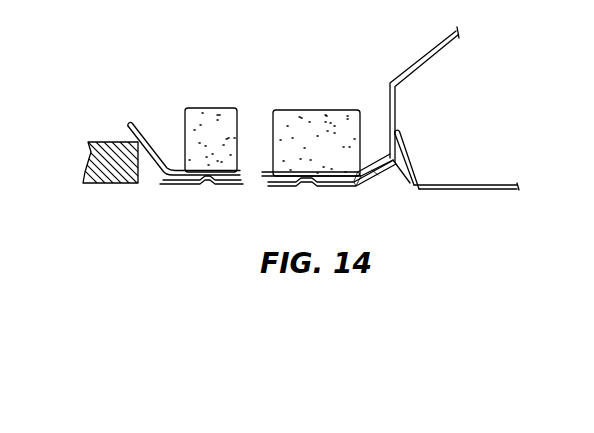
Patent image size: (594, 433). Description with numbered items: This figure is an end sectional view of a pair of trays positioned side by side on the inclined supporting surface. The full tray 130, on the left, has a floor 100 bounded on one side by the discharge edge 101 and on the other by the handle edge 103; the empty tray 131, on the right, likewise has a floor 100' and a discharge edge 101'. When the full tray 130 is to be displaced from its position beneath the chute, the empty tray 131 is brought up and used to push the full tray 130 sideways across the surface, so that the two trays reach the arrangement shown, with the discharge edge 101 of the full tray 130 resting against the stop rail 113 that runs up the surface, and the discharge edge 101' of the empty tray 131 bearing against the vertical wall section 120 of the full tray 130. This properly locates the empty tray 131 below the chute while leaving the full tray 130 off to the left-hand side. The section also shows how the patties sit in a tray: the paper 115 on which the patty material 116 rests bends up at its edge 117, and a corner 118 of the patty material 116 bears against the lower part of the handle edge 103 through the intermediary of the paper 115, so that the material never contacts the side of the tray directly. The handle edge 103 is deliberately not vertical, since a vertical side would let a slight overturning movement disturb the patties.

The floor 100 is at (332, 192).
The floor 100' is at (473, 206).
The discharge edge 101 is at (186, 199).
The discharge edge 101' is at (434, 149).
The handle edge 103 is at (407, 167).
The stop rail 113 is at (125, 153).
The paper 115 is at (270, 186).
The patty material 116 is at (317, 120).
The edge 117 is at (378, 176).
The corner 118 is at (355, 189).
The vertical wall section 120 is at (396, 95).
The full tray 130 is at (246, 90).
The empty tray 131 is at (505, 110).